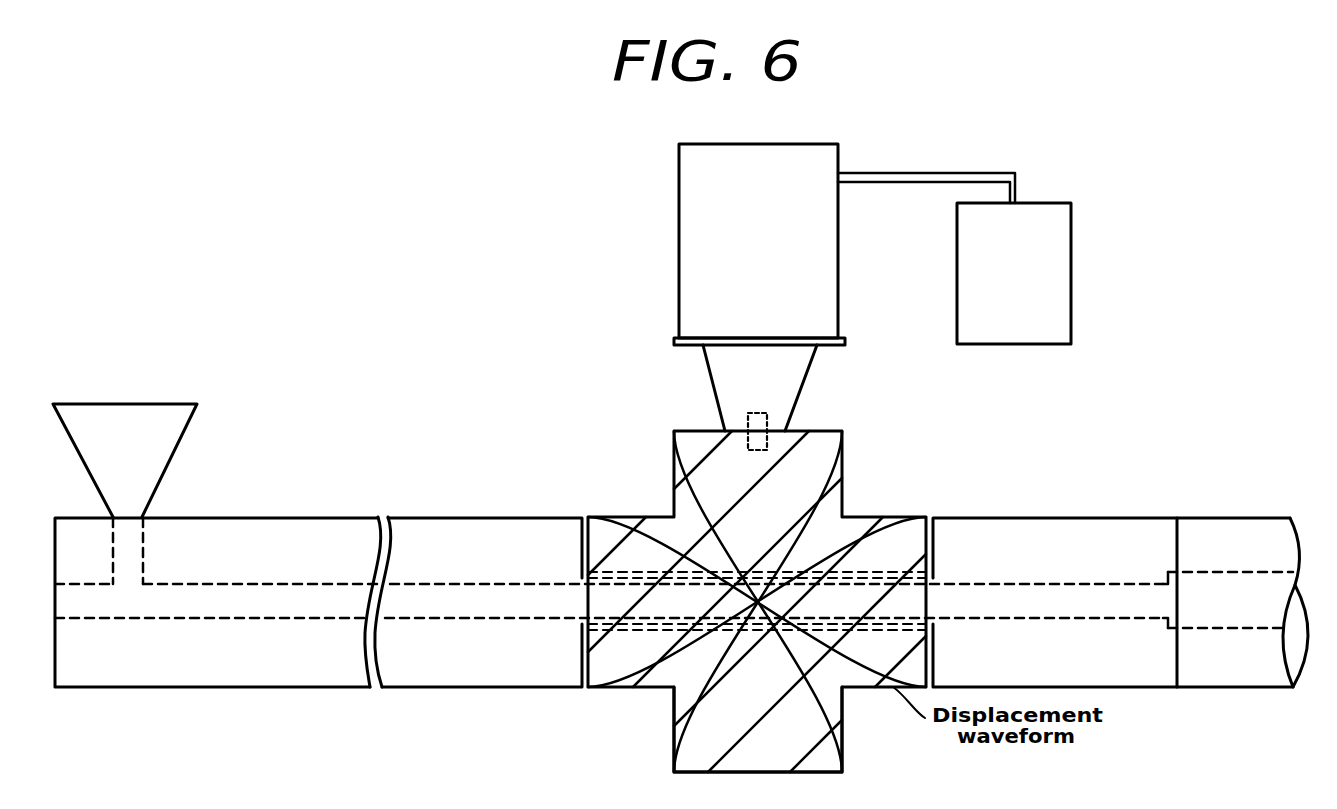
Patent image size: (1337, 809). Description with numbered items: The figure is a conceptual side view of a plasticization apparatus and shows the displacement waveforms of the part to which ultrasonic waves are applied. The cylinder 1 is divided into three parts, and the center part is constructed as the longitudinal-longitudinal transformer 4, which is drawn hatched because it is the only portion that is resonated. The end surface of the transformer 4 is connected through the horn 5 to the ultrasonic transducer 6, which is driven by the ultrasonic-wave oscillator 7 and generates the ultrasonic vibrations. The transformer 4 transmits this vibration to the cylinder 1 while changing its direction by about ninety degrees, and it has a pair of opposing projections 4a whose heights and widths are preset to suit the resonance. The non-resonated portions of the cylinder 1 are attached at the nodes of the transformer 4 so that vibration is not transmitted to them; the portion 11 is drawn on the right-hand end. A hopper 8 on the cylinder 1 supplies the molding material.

The cylinder 1 is at (603, 710).
The longitudinal-longitudinal (L-L) transformer 4 is at (823, 440).
The projections 4a is at (842, 737).
The horn 5 is at (722, 380).
The ultrasonic transducer 6 is at (827, 268).
The ultrasonic-wave oscillator 7 is at (1057, 278).
The hopper 8 is at (168, 443).
The pipe end connector 11 is at (1198, 680).